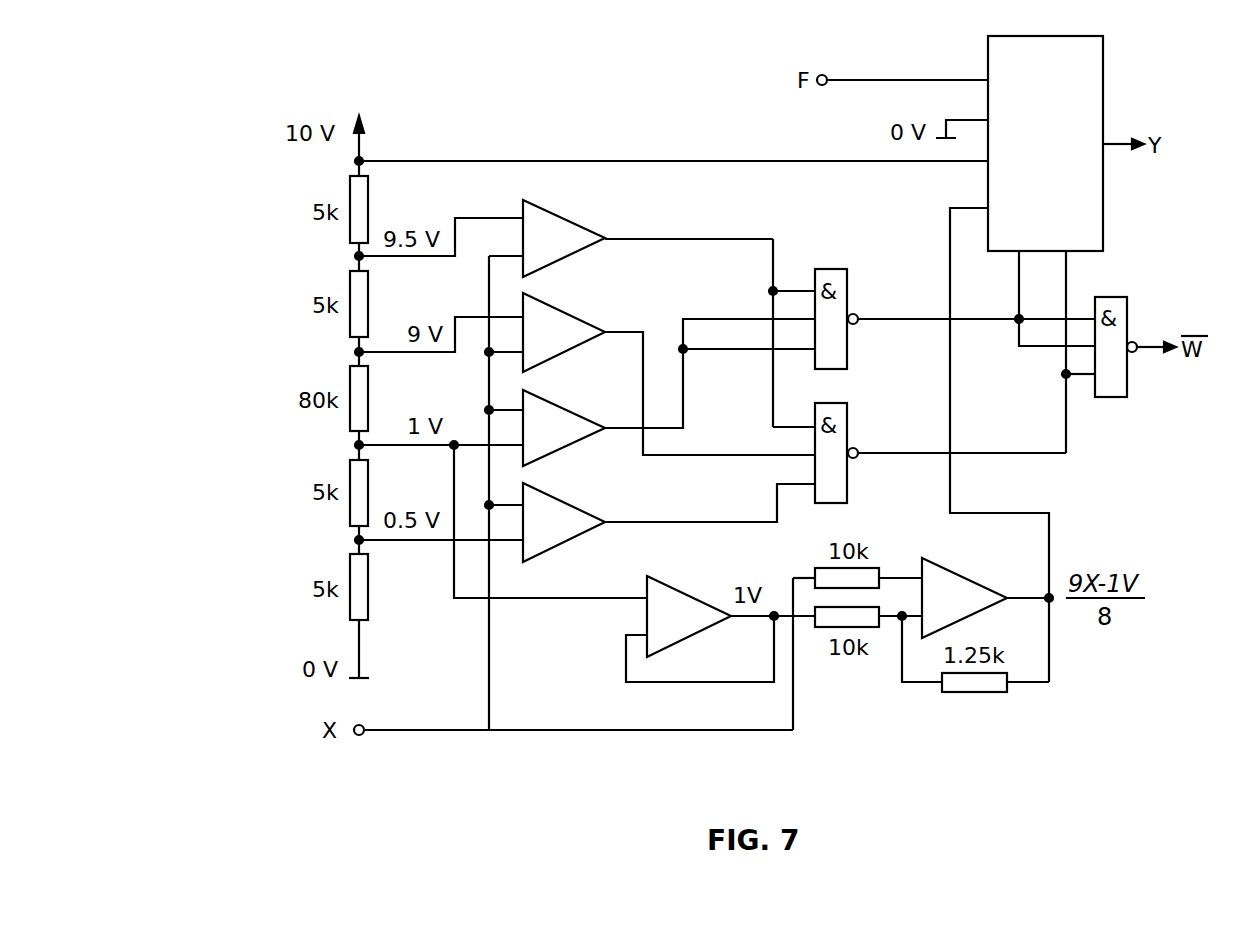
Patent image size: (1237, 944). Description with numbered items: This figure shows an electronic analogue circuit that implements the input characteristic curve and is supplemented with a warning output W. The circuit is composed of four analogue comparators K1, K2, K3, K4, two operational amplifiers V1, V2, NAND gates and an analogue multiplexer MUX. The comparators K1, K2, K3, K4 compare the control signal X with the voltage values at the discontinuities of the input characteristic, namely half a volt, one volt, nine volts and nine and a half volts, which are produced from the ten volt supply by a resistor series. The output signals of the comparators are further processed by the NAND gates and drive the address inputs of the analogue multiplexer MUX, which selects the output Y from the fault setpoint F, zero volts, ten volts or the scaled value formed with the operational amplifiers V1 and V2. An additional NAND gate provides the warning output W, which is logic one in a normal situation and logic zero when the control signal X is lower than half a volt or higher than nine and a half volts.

The analogue comparator K1 is at (564, 522).
The analogue comparator K2 is at (564, 428).
The analogue comparator K3 is at (564, 332).
The analogue comparator K4 is at (564, 238).
The operational amplifier V1 is at (689, 616).
The operational amplifier V2 is at (964, 598).
The analogue multiplexer MUX is at (1045, 143).